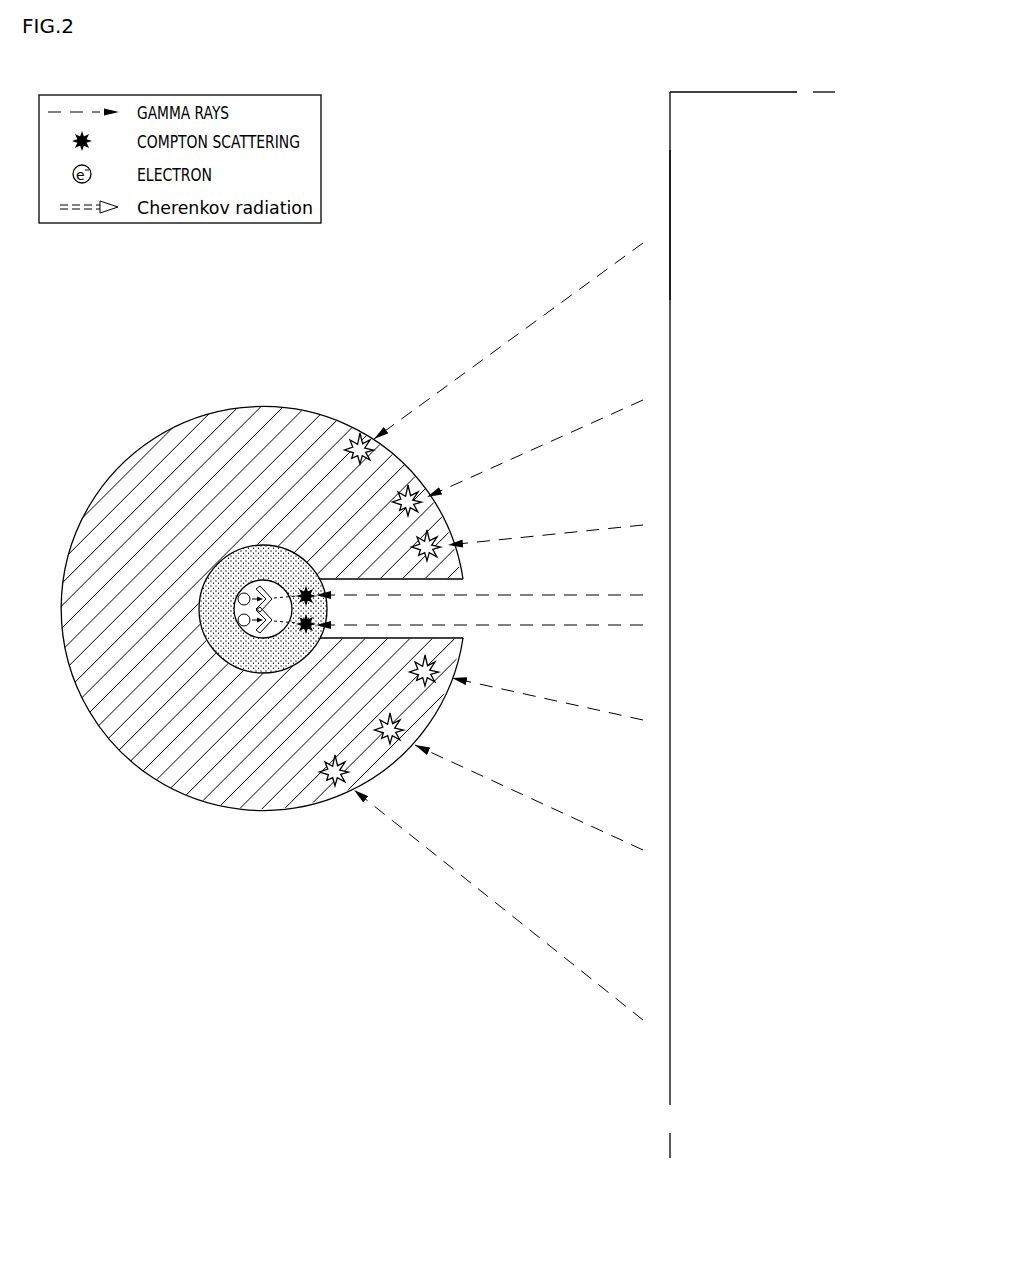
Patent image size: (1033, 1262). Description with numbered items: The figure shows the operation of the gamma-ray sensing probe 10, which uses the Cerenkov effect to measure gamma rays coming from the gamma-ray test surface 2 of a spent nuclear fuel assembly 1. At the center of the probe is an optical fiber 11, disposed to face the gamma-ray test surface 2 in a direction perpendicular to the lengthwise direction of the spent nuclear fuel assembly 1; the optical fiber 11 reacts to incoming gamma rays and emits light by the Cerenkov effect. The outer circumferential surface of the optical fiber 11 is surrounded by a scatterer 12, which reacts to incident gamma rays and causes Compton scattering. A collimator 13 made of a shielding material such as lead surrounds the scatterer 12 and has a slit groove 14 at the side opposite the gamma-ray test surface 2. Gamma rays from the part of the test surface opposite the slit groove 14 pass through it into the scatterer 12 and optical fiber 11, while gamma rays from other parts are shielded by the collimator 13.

The spent nuclear fuel assembly 1 is at (646, 109).
The gamma-ray test surface 2 is at (670, 184).
The gamma-ray sensing probe 10 is at (436, 566).
The optical fiber 11 is at (215, 591).
The scatterer 12 is at (233, 583).
The collimator 13 is at (248, 418).
The slit groove 14 is at (457, 627).